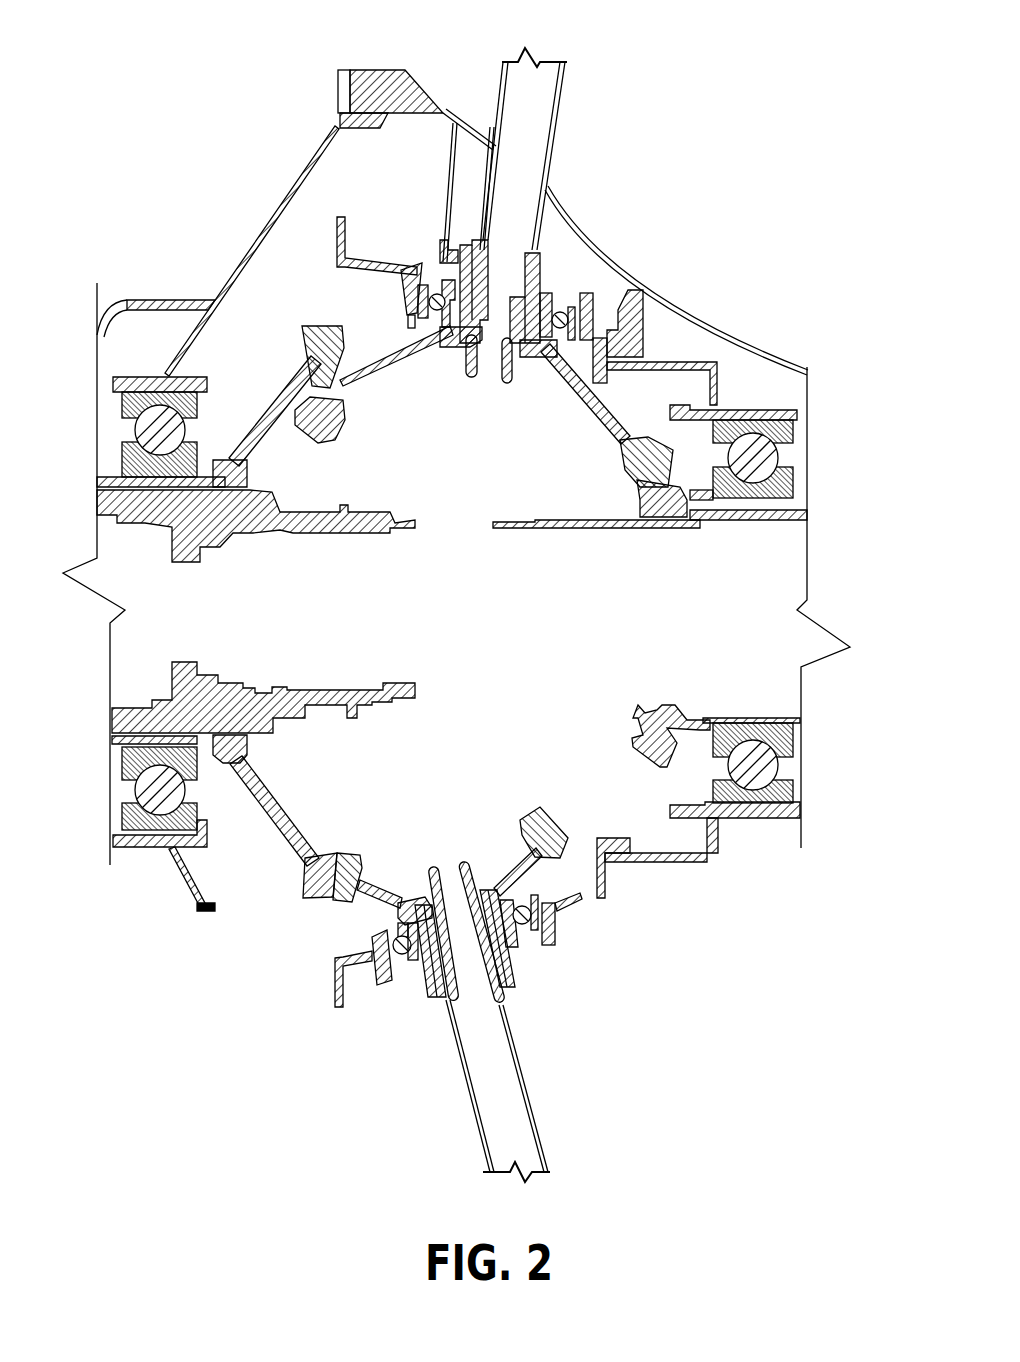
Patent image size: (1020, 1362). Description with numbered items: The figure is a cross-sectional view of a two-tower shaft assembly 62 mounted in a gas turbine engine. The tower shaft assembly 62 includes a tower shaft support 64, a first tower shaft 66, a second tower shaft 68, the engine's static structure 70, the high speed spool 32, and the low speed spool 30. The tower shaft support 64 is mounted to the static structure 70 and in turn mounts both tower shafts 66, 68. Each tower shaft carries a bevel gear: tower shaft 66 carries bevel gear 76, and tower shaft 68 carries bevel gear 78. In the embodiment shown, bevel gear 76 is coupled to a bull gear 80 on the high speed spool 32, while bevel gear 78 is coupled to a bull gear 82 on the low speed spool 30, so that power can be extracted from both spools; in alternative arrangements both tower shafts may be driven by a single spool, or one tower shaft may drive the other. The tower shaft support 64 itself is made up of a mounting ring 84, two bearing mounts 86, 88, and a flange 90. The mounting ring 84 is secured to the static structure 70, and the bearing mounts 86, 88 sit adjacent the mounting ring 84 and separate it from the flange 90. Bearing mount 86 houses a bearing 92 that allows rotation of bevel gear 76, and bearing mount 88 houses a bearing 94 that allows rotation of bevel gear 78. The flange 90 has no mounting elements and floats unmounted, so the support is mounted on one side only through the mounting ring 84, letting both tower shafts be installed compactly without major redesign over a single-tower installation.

The low speed spool 30 is at (258, 690).
The high speed spool 32 is at (613, 527).
The tower shaft assembly 62 is at (755, 100).
The tower shaft support 64 is at (612, 286).
The tower shaft 66 is at (550, 137).
The tower shaft 68 is at (528, 1080).
The static structure 70 is at (388, 66).
The bevel gear 76 is at (622, 467).
The bevel gear 78 is at (527, 812).
The bull gear 80 is at (686, 502).
The bull gear 82 is at (338, 333).
The mounting ring 84 is at (587, 367).
The bearing mount 86 is at (418, 268).
The bearing mount 88 is at (560, 935).
The flange 90 is at (342, 228).
The bearing 92 is at (425, 327).
The bearing 94 is at (378, 912).